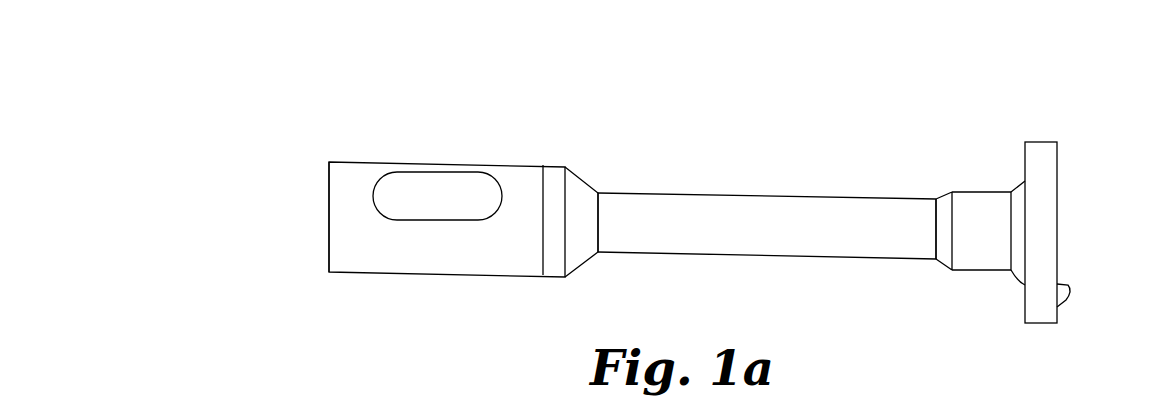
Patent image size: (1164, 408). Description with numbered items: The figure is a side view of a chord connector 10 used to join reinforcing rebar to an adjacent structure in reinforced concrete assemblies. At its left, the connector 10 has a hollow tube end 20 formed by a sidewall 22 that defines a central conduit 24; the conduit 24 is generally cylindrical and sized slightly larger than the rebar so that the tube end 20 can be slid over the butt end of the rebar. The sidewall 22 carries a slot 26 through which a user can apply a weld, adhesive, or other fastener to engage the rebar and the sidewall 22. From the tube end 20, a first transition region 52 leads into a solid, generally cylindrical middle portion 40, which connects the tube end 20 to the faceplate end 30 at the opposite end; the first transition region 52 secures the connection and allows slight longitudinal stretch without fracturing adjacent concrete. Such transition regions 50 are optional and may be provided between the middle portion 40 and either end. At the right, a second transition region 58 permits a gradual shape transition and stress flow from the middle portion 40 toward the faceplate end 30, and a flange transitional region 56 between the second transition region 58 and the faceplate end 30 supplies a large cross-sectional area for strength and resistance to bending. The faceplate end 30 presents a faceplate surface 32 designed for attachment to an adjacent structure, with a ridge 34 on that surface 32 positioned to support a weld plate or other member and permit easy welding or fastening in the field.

The connector 10 is at (235, 154).
The tube end 20 is at (347, 153).
The sidewall 22 is at (515, 178).
The central conduit 24 is at (320, 224).
The slot 26 is at (442, 188).
The first transition region 52 is at (580, 180).
The middle portion 40 is at (729, 184).
The transition regions 50 is at (578, 240).
The faceplate end 30 is at (1052, 131).
The second transition region 58 is at (940, 195).
The flange transitional region 56 is at (978, 272).
The faceplate surface 32 is at (1057, 182).
The ridge 34 is at (1057, 307).